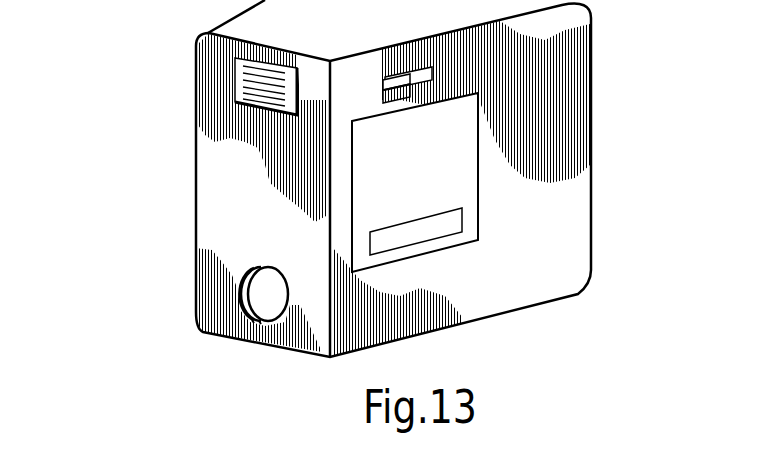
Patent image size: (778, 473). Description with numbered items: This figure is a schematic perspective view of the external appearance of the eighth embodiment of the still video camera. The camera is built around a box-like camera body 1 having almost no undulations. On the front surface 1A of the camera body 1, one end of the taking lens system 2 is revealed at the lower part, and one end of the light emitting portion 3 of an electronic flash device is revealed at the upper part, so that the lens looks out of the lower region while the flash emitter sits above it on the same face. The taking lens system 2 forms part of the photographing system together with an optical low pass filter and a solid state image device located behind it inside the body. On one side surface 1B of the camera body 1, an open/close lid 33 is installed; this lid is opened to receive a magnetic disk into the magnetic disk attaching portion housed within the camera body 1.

The camera body 1 is at (584, 183).
The front surface 1A is at (212, 208).
The side surface 1B is at (487, 302).
The taking lens system 2 is at (246, 298).
The light emitting portion 3 is at (248, 91).
The open/close lid 33 is at (465, 195).